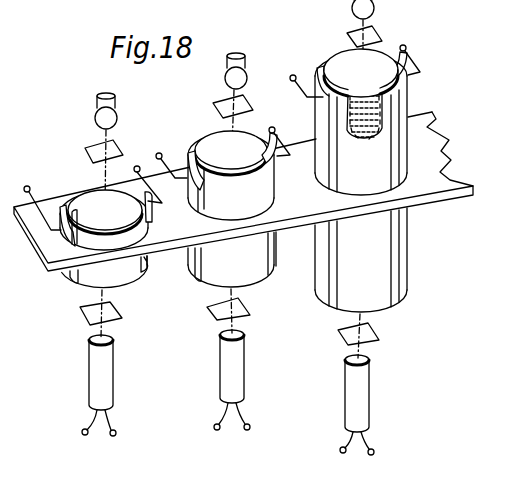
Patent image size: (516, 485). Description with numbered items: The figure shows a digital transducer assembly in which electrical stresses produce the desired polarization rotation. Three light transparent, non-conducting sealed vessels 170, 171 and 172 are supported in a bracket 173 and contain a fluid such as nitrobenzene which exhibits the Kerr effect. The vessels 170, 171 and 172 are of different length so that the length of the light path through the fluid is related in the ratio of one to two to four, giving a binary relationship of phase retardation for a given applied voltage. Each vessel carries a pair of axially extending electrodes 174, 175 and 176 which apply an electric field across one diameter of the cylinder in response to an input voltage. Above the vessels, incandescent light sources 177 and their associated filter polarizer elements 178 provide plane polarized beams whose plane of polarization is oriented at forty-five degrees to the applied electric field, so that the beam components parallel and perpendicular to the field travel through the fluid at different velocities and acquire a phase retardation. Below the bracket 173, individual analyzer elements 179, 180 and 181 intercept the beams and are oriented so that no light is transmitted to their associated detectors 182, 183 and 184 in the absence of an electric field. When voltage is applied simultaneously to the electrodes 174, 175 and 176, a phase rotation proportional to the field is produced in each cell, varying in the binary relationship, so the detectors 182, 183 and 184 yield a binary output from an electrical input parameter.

The sealed vessel 170 is at (86, 199).
The sealed vessel 171 is at (211, 148).
The sealed vessel 172 is at (340, 66).
The bracket 173 is at (452, 163).
The electrodes 174 is at (149, 228).
The electrodes 175 is at (267, 198).
The electrodes 176 is at (397, 165).
The incandescent light sources 177 is at (96, 116).
The filter polarizer elements 178 is at (114, 146).
The analyzer element 179 is at (117, 311).
The analyzer element 180 is at (243, 306).
The analyzer element 181 is at (376, 331).
The detector 182 is at (113, 366).
The detector 183 is at (245, 361).
The detector 184 is at (369, 386).